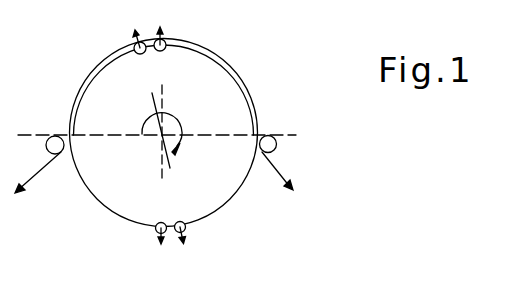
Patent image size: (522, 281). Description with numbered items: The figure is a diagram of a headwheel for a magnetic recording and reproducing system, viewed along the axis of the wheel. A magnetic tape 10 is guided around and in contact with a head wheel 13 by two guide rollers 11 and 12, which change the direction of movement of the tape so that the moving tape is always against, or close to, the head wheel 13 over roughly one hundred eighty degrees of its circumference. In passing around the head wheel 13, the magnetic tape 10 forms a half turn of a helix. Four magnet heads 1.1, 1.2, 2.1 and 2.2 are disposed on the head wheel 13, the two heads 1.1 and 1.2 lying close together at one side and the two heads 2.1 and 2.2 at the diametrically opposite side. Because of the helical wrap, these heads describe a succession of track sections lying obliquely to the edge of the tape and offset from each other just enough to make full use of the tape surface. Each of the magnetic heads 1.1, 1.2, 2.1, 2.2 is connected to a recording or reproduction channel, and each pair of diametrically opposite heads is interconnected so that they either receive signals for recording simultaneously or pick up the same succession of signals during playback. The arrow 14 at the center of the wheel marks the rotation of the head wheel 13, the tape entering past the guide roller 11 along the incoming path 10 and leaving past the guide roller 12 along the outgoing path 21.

The magnet head 1.1 is at (168, 56).
The magnet head 1.2 is at (139, 58).
The magnet head 2.1 is at (154, 219).
The magnet head 2.2 is at (189, 219).
The magnetic tape 10 is at (278, 171).
The guide roller 11 is at (267, 136).
The guide roller 12 is at (54, 137).
The head wheel 13 is at (115, 204).
The direction of rotation 14 is at (175, 122).
The outgoing web 21 is at (38, 176).